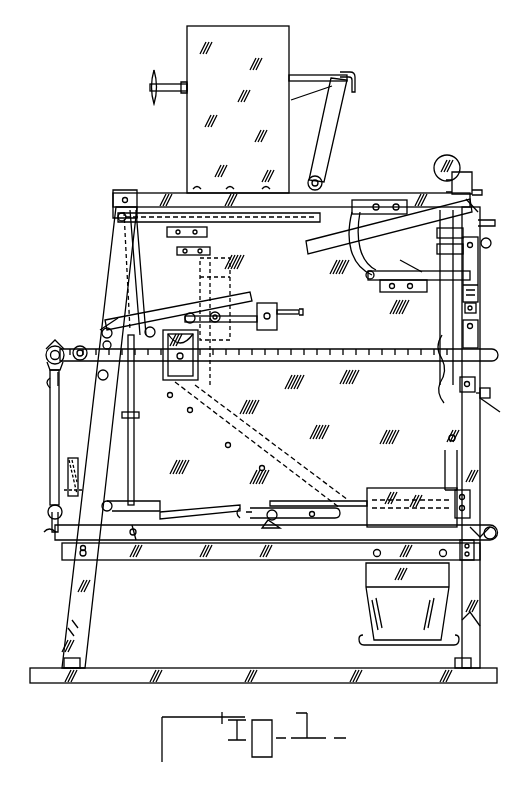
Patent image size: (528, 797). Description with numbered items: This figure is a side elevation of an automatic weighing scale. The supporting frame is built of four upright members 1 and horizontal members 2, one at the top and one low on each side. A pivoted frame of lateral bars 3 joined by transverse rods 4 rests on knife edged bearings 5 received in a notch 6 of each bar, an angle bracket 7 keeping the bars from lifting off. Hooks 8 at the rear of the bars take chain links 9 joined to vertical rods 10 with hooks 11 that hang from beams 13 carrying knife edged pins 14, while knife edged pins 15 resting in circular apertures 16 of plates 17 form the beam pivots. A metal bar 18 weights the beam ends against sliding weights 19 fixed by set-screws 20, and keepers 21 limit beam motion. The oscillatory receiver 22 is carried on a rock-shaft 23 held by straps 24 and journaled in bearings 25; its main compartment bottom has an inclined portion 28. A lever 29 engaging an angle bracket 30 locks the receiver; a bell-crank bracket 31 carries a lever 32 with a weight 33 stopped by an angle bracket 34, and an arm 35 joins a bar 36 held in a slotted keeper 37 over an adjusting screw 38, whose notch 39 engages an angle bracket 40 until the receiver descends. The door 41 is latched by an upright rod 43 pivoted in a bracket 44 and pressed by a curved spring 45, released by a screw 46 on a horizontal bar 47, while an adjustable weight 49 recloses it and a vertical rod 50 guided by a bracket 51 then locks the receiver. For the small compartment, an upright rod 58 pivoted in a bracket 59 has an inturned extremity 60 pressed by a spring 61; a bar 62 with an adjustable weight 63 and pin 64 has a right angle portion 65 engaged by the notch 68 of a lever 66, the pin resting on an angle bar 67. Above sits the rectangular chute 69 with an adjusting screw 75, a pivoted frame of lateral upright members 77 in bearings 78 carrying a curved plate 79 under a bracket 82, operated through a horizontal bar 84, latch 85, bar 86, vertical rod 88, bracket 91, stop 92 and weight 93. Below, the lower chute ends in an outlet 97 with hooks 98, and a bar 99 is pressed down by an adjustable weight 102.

The upright members 1 is at (113, 242).
The horizontal members 2 is at (143, 196).
The lateral bars 3 is at (200, 542).
The transverse rods 4 is at (130, 540).
The knife edged bearings 5 is at (476, 560).
The notch 6 is at (484, 527).
The angle bracket 7 is at (470, 495).
The hooks 8 is at (46, 533).
The chain link 9 is at (48, 520).
The vertical rod 10 is at (50, 447).
The hook 11 is at (50, 384).
The beams 13 is at (286, 352).
The knife edged pins 14 is at (51, 347).
The knife edged pins 15 is at (102, 340).
The circular apertures 16 is at (103, 325).
The plates 17 is at (98, 375).
The metal bar 18 is at (77, 346).
The sliding weights 19 is at (168, 395).
The set-screws 20 is at (182, 372).
The keepers 21 is at (478, 340).
The oscillatory receiver 22 is at (289, 369).
The rock-shaft 23 is at (274, 508).
The straps 24 is at (252, 508).
The bearings 25 is at (274, 525).
The inclined portion 28 is at (204, 418).
The lever 29 is at (256, 220).
The angle bracket 30 is at (172, 238).
The bracket 31 is at (368, 198).
The lever 32 is at (344, 242).
The weight 33 is at (480, 210).
The angle bracket 34 is at (486, 230).
The arm 35 is at (366, 258).
The bar 36 is at (380, 282).
The slotted keeper 37 is at (480, 264).
The adjusting screw 38 is at (477, 307).
The notch 39 is at (401, 257).
The angle bracket 40 is at (420, 292).
The door 41 is at (360, 503).
The upright rod 43 is at (448, 468).
The bracket 44 is at (449, 438).
The curved spring 45 is at (440, 347).
The screw 46 is at (490, 390).
The horizontal bar 47 is at (503, 408).
The adjustable weight 49 is at (162, 512).
The vertical rod 50 is at (136, 458).
The bracket 51 is at (137, 418).
The upright rod 58 is at (140, 300).
The bracket 59 is at (122, 266).
The inturned extremity 60 is at (146, 336).
The spring 61 is at (150, 322).
The bar 62 is at (250, 312).
The adjustable weight 63 is at (272, 306).
The pin 64 is at (295, 310).
The right angle portion 65 is at (205, 360).
The lever 66 is at (196, 310).
The angle bar 67 is at (183, 258).
The notch 68 is at (220, 310).
The rectangular chute 69 is at (238, 109).
The adjusting screw 75 is at (168, 93).
The lateral upright members 77 is at (337, 138).
The bearings 78 is at (322, 182).
The curved plate 79 is at (310, 75).
The bracket 82 is at (350, 70).
The horizontal bar 84 is at (440, 238).
The latch 85 is at (492, 244).
The bar 86 is at (318, 112).
The vertical rod 88 is at (440, 257).
The bracket 91 is at (484, 192).
The stop 92 is at (470, 175).
The weight 93 is at (444, 156).
The outlet 97 is at (407, 601).
The hooks 98 is at (364, 640).
The bar 99 is at (140, 540).
The adjustable weight 102 is at (78, 466).